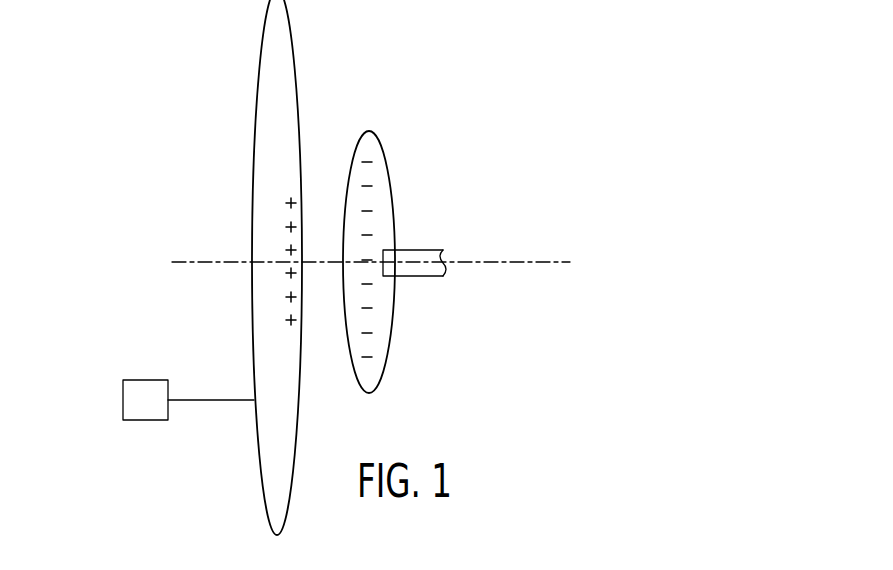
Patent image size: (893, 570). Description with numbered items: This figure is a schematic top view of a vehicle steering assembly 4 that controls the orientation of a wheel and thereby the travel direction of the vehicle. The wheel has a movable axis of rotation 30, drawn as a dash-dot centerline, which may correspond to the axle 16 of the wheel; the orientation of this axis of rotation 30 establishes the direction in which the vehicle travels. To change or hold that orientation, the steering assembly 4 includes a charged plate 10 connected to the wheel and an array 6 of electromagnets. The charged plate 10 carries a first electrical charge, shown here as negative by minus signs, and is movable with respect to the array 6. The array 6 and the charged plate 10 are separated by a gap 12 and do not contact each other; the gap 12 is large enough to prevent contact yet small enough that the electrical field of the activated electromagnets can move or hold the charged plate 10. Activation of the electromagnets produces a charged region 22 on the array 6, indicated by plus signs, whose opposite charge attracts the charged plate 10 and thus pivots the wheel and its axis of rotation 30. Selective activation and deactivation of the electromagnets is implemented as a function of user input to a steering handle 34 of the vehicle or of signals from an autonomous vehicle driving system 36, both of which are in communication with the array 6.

The vehicle steering assembly 4 is at (310, 267).
The array of electromagnets 6 is at (272, 122).
The charged plate 10 is at (395, 205).
The gap 12 is at (377, 229).
The axle 16 is at (414, 250).
The charged region 22 is at (278, 291).
The axis of rotation 30 is at (483, 262).
The steering handle 34 is at (152, 379).
The autonomous vehicle driving system 36 is at (146, 380).